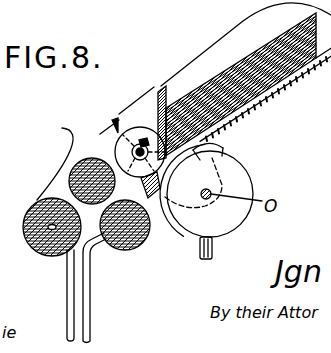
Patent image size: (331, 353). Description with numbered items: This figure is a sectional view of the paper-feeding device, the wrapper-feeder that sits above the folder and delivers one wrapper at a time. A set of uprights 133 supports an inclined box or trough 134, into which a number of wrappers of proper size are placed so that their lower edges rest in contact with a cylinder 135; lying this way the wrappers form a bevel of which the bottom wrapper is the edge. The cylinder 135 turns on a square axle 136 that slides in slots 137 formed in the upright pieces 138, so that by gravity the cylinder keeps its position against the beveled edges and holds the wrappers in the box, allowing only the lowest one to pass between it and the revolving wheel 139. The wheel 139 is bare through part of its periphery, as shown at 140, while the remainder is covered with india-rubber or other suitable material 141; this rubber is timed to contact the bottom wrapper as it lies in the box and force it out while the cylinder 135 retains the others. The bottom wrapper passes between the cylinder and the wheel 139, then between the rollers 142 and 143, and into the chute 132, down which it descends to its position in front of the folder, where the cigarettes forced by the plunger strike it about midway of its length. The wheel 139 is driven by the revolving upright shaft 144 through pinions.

The chute 132 is at (66, 298).
The uprights 133 is at (93, 313).
The inclined box or trough 134 is at (232, 34).
The cylinder 135 is at (143, 131).
The square axle 136 is at (118, 132).
The slots 137 is at (215, 150).
The upright pieces 138 is at (121, 128).
The revolving wheel 139 is at (237, 184).
The bare part of wheel periphery 140 is at (248, 221).
The india-rubber covering 141 is at (150, 164).
The roller 142 is at (62, 128).
The roller 143 is at (127, 250).
The revolving upright shaft 144 is at (214, 253).